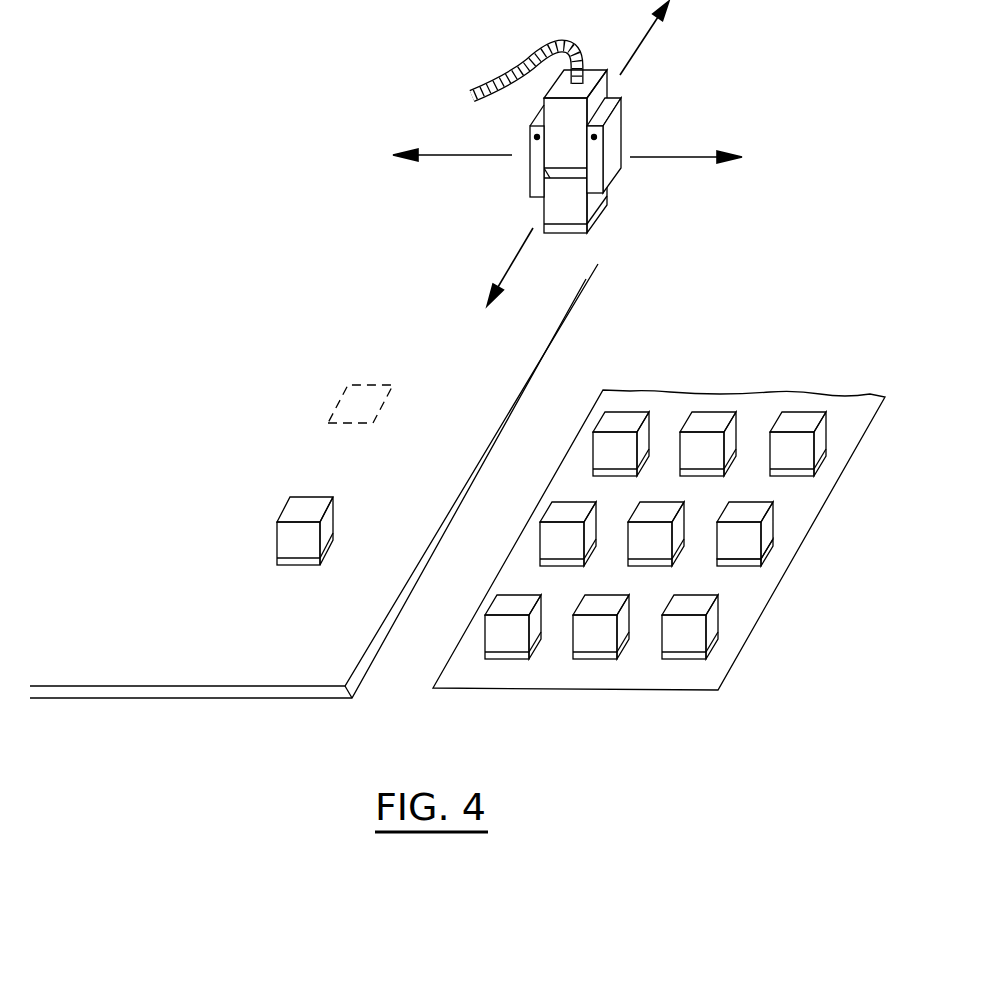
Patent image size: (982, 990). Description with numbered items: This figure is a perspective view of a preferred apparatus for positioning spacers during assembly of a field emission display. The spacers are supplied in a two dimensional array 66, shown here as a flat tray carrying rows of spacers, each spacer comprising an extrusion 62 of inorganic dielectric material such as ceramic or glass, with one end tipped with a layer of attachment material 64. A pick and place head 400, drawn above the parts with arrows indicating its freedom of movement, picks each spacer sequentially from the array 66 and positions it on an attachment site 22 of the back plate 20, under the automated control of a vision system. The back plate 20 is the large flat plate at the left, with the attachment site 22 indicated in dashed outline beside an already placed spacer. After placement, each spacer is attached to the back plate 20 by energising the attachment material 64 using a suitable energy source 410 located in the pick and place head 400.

The pick and place head 400 is at (613, 143).
The energy source 410 is at (567, 118).
The back plate 20 is at (296, 680).
The attachment site 22 is at (336, 404).
The extrusion 62 is at (767, 525).
The attachment material 64 is at (767, 558).
The two dimensional array 66 is at (642, 675).